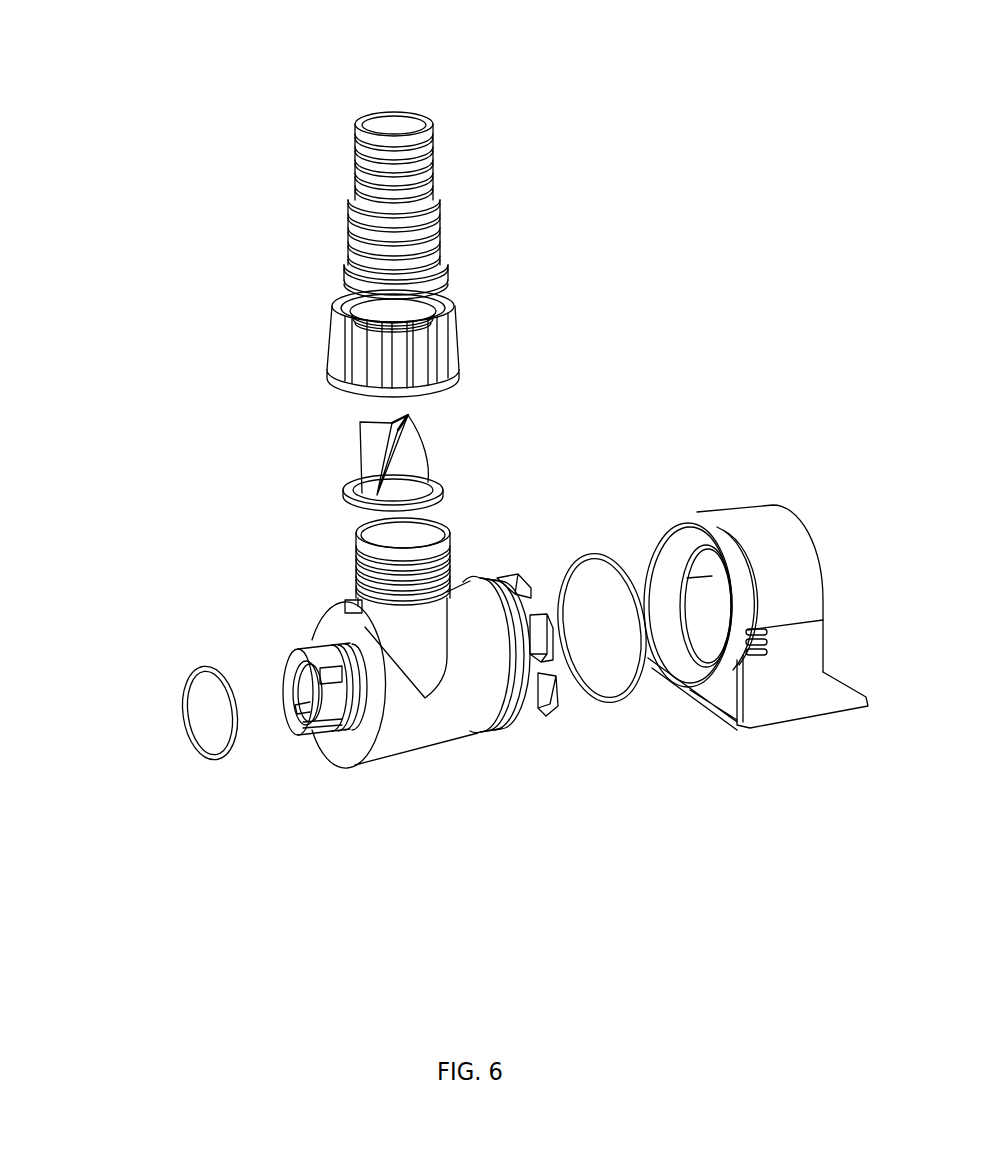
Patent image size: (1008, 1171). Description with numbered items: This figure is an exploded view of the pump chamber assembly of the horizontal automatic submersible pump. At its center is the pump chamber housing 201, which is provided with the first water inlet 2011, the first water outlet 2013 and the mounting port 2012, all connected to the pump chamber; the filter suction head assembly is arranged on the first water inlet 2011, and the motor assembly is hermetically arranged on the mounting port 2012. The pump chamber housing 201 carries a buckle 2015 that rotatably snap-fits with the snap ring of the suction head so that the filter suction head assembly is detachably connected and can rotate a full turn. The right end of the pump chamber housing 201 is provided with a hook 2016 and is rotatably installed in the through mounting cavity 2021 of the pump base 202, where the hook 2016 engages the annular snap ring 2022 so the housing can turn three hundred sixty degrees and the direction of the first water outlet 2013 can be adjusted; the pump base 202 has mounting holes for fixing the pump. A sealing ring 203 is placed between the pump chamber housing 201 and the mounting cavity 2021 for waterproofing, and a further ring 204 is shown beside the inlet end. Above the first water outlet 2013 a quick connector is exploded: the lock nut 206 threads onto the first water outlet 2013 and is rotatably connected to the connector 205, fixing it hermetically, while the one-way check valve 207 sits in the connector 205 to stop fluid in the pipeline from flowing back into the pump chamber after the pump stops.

The pump chamber housing 201 is at (458, 692).
The first water inlet 2011 is at (298, 700).
The mounting port 2012 is at (538, 607).
The first water outlet 2013 is at (400, 537).
The buckle 2015 is at (333, 732).
The hook 2016 is at (550, 703).
The pump base 202 is at (777, 550).
The mounting cavity 2021 is at (677, 647).
The annular snap ring 2022 is at (708, 683).
The sealing ring 203 is at (606, 556).
The O-ring 204 is at (212, 760).
The connector 205 is at (353, 187).
The lock nut 206 is at (332, 318).
The one-way check valve 207 is at (378, 466).